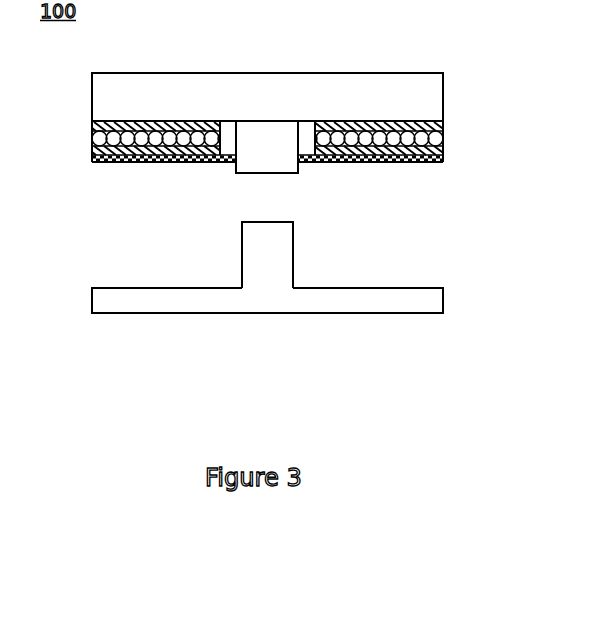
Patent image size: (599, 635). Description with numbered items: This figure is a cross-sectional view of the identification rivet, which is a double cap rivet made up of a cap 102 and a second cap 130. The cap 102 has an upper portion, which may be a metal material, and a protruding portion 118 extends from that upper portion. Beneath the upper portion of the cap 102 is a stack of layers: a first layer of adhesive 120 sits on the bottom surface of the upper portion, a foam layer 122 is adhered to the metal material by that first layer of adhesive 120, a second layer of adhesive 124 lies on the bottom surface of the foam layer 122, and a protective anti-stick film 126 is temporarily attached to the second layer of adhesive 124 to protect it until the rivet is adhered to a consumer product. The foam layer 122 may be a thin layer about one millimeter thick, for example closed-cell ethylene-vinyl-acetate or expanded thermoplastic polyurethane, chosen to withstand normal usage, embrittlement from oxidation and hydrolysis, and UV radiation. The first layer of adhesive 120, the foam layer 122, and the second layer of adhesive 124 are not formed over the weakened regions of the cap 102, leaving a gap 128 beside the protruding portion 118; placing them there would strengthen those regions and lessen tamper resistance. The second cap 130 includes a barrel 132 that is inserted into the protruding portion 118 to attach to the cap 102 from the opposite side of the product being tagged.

The cap 102 is at (443, 85).
The protruding portion 118 is at (247, 174).
The first layer of adhesive 120 is at (443, 123).
The foam layer 122 is at (443, 138).
The second layer of adhesive 124 is at (443, 149).
The protective anti-stick film 126 is at (443, 161).
The gap 128 is at (305, 148).
The second cap 130 is at (375, 300).
The barrel 132 is at (293, 246).